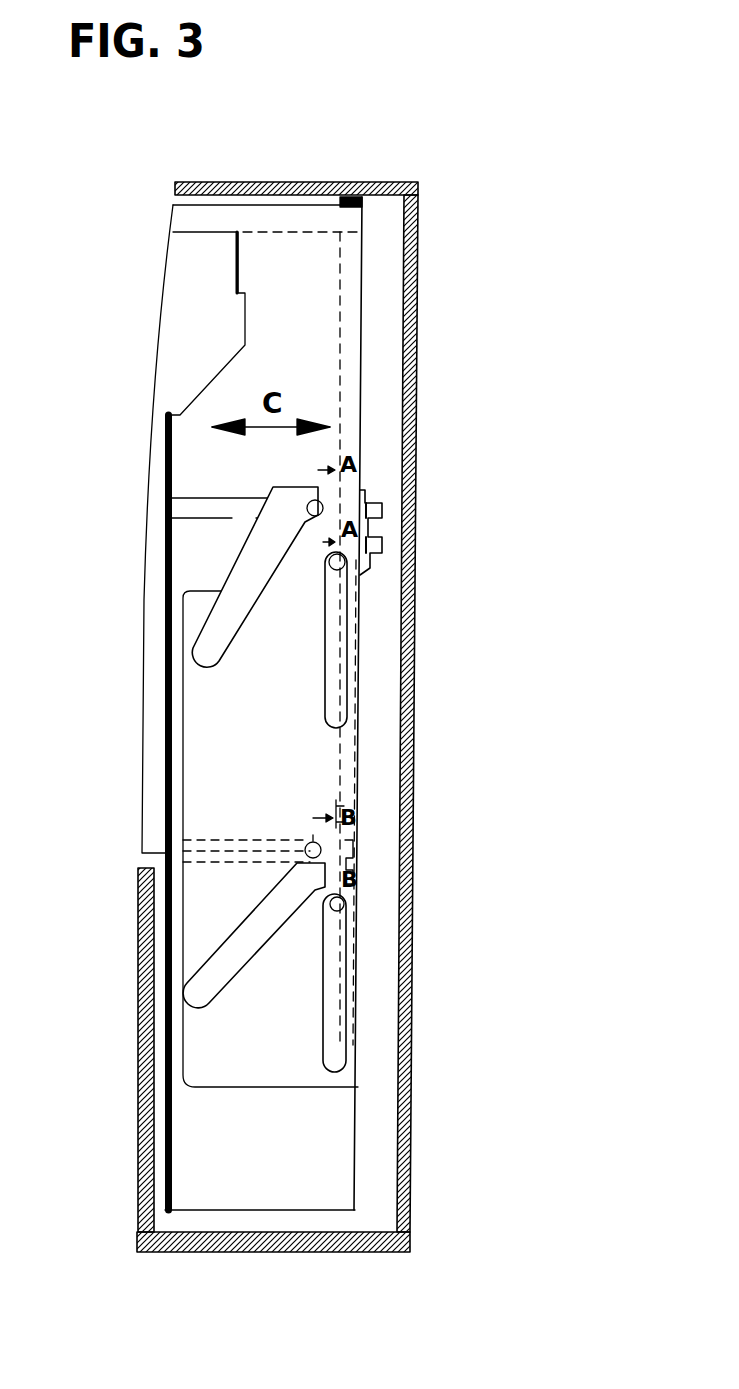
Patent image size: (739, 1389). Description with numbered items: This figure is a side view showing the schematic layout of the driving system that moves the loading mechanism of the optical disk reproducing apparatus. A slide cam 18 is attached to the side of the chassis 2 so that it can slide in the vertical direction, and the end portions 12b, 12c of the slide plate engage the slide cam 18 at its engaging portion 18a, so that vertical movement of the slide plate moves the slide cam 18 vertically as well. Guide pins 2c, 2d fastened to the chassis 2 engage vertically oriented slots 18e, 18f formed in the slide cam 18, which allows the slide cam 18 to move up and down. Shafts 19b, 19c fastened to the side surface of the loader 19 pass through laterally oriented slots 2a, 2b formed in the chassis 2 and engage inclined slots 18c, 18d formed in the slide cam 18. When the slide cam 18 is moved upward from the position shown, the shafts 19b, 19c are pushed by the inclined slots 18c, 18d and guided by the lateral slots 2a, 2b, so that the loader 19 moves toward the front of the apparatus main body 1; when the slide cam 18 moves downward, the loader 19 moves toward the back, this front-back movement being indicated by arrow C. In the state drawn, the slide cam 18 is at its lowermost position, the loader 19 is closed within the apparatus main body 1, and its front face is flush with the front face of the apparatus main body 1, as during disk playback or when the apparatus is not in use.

The apparatus main body 1 is at (380, 184).
The chassis 2 is at (357, 1143).
The laterally oriented slot 2a is at (205, 496).
The laterally oriented slot 2b is at (212, 842).
The guide pin 2c is at (356, 578).
The guide pin 2d is at (344, 908).
The end portion of the slide plate 12b is at (393, 544).
The end portion of the slide plate 12c is at (354, 802).
The slide cam 18 is at (183, 703).
The engaging pawl 18a is at (390, 531).
The inclined slot 18c is at (245, 580).
The inclined slot 18d is at (248, 924).
The vertically oriented slot 18e is at (350, 649).
The vertically oriented slot 18f is at (350, 994).
The loader 19 is at (157, 328).
The shaft 19b is at (332, 515).
The shaft 19c is at (330, 846).